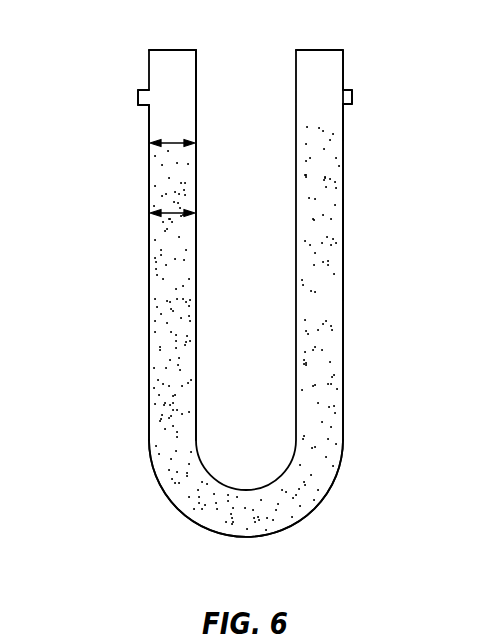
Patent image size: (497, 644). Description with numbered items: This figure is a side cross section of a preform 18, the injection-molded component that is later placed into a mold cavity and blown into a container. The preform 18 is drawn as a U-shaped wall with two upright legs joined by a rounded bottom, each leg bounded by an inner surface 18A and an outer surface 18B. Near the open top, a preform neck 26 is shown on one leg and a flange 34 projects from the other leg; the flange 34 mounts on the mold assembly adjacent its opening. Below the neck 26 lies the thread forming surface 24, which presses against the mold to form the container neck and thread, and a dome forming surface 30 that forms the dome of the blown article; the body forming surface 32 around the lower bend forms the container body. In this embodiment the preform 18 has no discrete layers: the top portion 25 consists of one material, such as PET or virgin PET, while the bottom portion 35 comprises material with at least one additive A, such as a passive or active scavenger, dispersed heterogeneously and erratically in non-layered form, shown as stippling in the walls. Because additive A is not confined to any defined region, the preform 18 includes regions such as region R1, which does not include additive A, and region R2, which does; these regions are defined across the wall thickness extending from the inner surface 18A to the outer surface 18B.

The preform 18 is at (114, 160).
The inner surface 18A is at (196, 242).
The outer surface 18B is at (148, 242).
The thread forming surface 24 is at (374, 142).
The top portion 25 is at (209, 69).
The preform neck 26 is at (148, 132).
The dome forming surface 30 is at (366, 115).
The body forming surface 32 is at (374, 463).
The flange 34 is at (352, 93).
The bottom portion 35 is at (378, 282).
The additive A is at (154, 353).
The region R1 is at (172, 201).
The region R2 is at (172, 129).